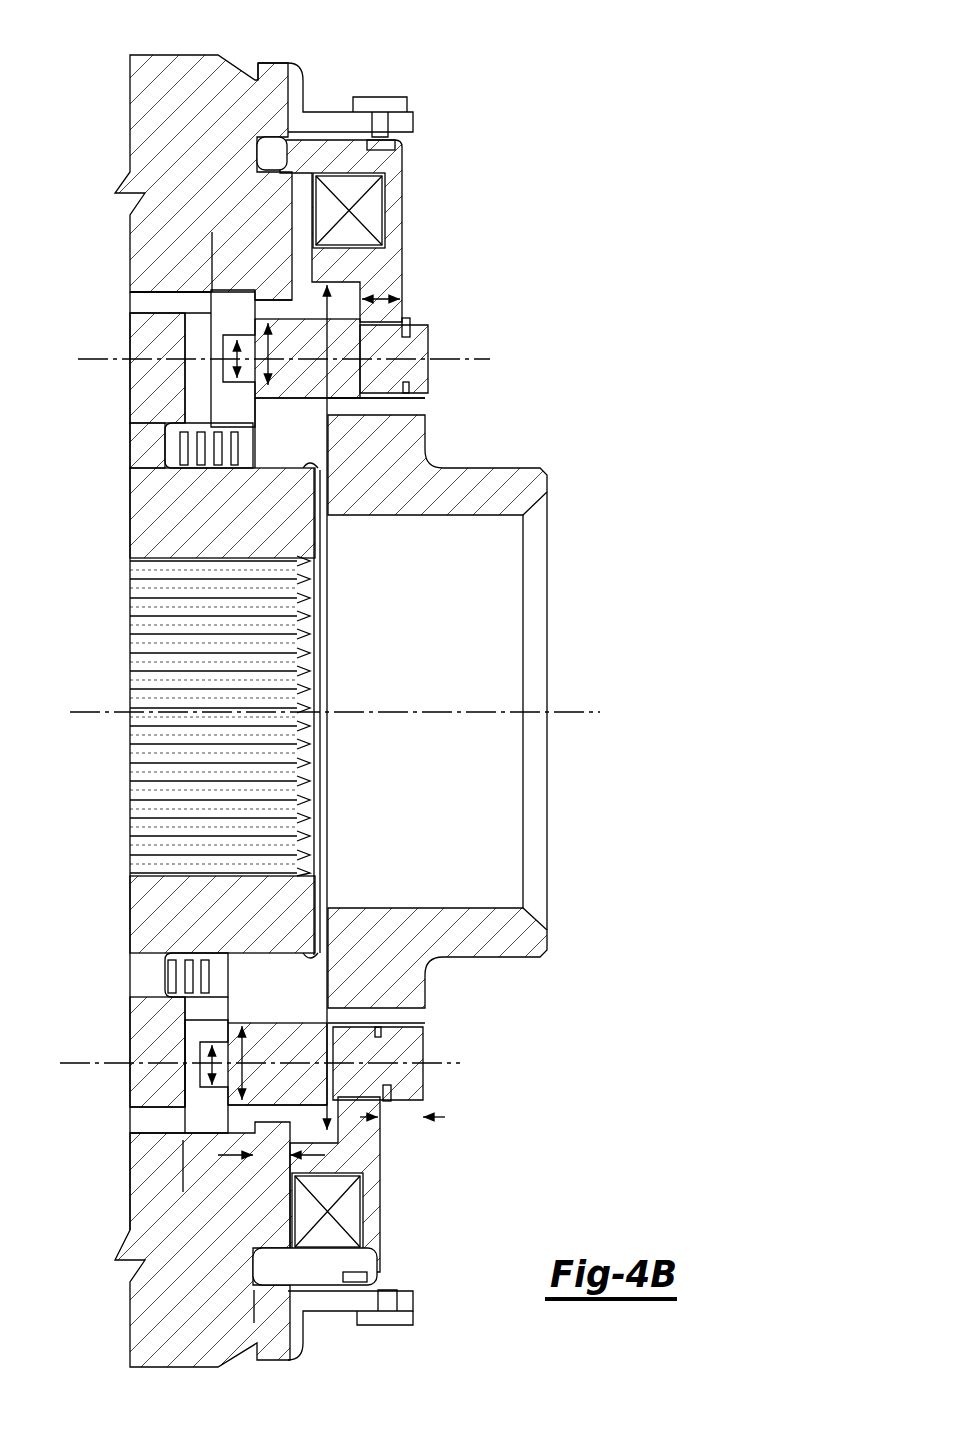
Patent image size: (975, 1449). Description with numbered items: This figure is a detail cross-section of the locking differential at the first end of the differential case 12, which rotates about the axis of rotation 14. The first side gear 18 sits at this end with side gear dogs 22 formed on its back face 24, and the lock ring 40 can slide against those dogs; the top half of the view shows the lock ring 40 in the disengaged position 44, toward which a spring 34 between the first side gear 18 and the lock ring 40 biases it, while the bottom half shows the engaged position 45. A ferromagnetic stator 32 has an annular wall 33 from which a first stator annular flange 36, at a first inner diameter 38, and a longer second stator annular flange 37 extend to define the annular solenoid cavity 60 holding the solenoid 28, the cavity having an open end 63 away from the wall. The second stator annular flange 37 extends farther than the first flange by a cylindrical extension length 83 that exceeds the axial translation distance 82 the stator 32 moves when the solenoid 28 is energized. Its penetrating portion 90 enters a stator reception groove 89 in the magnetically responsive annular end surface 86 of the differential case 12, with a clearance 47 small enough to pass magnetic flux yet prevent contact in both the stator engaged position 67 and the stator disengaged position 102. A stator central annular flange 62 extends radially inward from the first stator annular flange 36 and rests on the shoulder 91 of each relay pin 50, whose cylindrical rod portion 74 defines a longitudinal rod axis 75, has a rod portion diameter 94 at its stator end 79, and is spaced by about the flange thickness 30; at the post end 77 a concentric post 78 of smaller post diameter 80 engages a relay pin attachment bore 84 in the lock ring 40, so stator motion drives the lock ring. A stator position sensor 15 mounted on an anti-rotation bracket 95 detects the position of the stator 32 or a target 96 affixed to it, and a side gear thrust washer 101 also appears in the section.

The differential case 12 is at (163, 54).
The stator disengaged position 102 is at (277, 105).
The solenoid 28 is at (340, 187).
The second stator annular flange 37 is at (347, 157).
The stator position sensor 15 is at (385, 97).
The anti-rotation bracket 95 is at (413, 122).
The stator reception groove 89 is at (262, 140).
The penetrating portion 90 is at (275, 155).
The open end 63 is at (270, 167).
The stator 32 is at (397, 146).
The target 96 is at (385, 150).
The annular end surface 86 is at (292, 198).
The annular wall 33 is at (395, 210).
The annular solenoid cavity 60 is at (380, 232).
The first stator annular flange 36 is at (345, 260).
The stator central annular flange 62 is at (378, 278).
The flange thickness 30 is at (405, 299).
The shoulder 91 is at (395, 325).
The relay pin 50 is at (420, 338).
The longitudinal rod axis 75 is at (92, 355).
The post 78 is at (246, 340).
The relay pin attachment bore 84 is at (233, 352).
The post diameter 80 is at (233, 362).
The rod portion diameter 94 is at (272, 350).
The first side gear 18 is at (140, 405).
The post end 77 is at (262, 402).
The stator end 79 is at (395, 392).
The spring 34 is at (170, 445).
The side gear dogs 22 is at (183, 432).
The lock ring 40 is at (245, 458).
The cylindrical rod portion 74 is at (303, 377).
The side gear thrust washer 101 is at (322, 505).
The first inner diameter 38 is at (330, 655).
The axis of rotation 14 is at (585, 712).
The back face 24 is at (187, 300).
The disengaged position 44 is at (215, 262).
The engaged position 45 is at (183, 1165).
The clearance 47 is at (262, 1250).
The stator engaged position 67 is at (254, 1313).
The axial translation distance 82 is at (402, 1117).
The cylindrical extension length 83 is at (271, 1155).